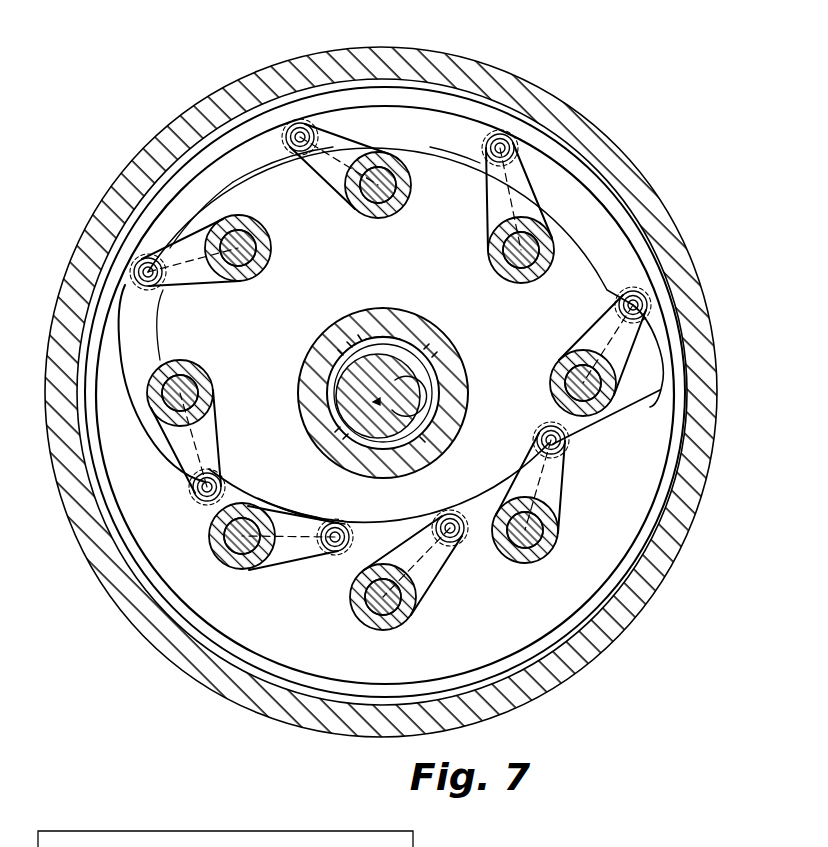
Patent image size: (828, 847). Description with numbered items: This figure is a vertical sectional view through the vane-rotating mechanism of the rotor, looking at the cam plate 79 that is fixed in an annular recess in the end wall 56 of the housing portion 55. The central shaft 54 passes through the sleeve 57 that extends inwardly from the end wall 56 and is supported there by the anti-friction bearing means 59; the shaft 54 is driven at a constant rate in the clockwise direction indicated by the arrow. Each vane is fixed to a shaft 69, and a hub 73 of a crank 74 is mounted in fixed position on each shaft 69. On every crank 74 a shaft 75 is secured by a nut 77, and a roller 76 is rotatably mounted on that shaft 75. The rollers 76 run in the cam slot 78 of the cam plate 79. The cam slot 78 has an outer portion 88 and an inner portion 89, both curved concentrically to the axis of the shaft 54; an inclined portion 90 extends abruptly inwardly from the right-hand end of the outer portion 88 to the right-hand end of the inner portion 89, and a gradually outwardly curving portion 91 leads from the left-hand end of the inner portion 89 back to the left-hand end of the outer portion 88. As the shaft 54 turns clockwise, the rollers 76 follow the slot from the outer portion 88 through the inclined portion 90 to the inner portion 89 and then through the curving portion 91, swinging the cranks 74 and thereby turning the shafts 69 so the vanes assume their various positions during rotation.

The shaft 54 is at (412, 372).
The housing portion 55 is at (640, 600).
The end wall 56 is at (682, 330).
The sleeve 57 is at (441, 378).
The anti-friction bearing means 59 is at (372, 345).
The shaft 69 is at (382, 202).
The hub 73 is at (375, 218).
The crank 74 is at (345, 140).
The shaft 75 is at (298, 126).
The roller 76 is at (310, 124).
The nut 77 is at (478, 160).
The cam slot 78 is at (272, 190).
The cam plate 79 is at (690, 470).
The outer portion of cam slot 88 is at (455, 135).
The inner portion of cam slot 89 is at (240, 480).
The inclined portion of cam slot 90 is at (590, 430).
The outwardly curving portion of cam slot 91 is at (165, 300).